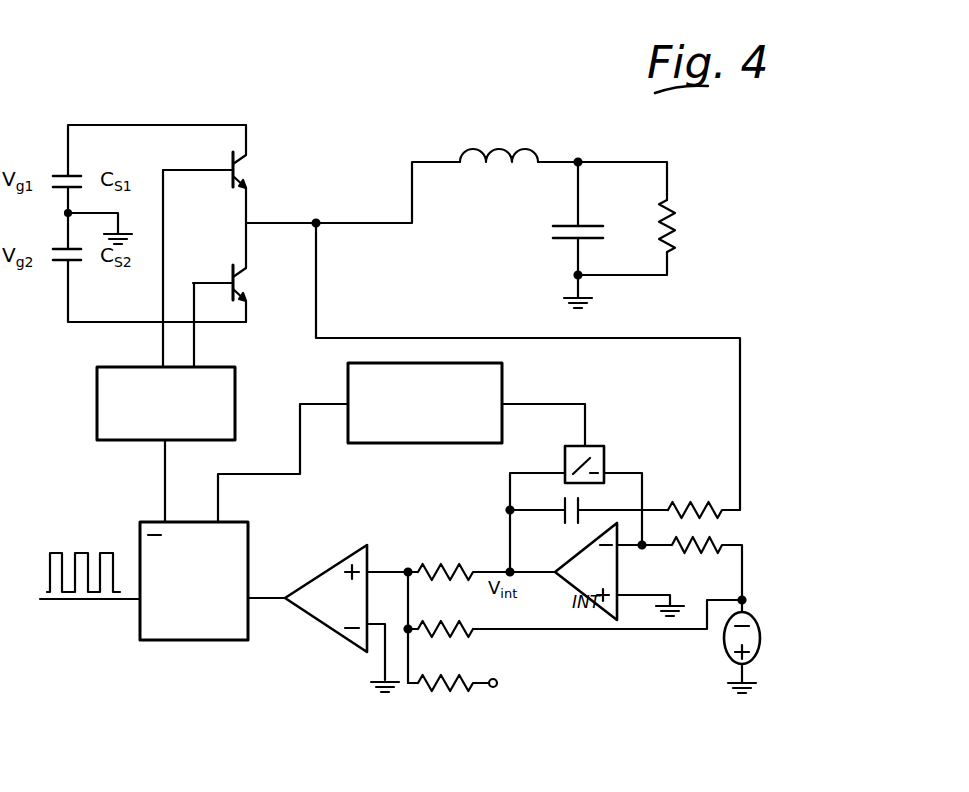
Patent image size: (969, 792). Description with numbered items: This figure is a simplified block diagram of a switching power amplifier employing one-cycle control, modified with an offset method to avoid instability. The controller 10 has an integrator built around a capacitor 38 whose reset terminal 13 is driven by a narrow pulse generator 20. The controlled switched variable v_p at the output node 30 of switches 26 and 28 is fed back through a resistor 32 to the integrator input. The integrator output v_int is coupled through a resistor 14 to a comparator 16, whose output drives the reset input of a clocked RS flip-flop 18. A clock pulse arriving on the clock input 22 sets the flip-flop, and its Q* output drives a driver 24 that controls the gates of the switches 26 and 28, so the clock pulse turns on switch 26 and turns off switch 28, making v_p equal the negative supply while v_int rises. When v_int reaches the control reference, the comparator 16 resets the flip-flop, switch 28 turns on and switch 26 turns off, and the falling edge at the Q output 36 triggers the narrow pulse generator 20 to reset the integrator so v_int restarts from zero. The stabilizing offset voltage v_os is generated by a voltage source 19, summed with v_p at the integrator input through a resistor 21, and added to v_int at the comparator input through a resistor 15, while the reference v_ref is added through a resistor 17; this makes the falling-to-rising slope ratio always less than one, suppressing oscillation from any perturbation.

The controller 10 is at (578, 138).
The reset terminal 13 is at (604, 442).
The resistor 14 is at (418, 560).
The resistor 15 is at (470, 640).
The comparator 16 is at (330, 633).
The resistor 17 is at (455, 693).
The clocked RS flip-flop 18 is at (248, 572).
The voltage source 19 is at (762, 629).
The narrow pulse generator 20 is at (503, 392).
The resistor 21 is at (725, 537).
The clock input 22 is at (122, 605).
The driver 24 is at (97, 403).
The switch 26 is at (250, 290).
The switch 28 is at (246, 160).
The output node 30 is at (322, 218).
The resistor 32 is at (710, 500).
The Q output 36 is at (218, 493).
The capacitor 38 is at (600, 495).